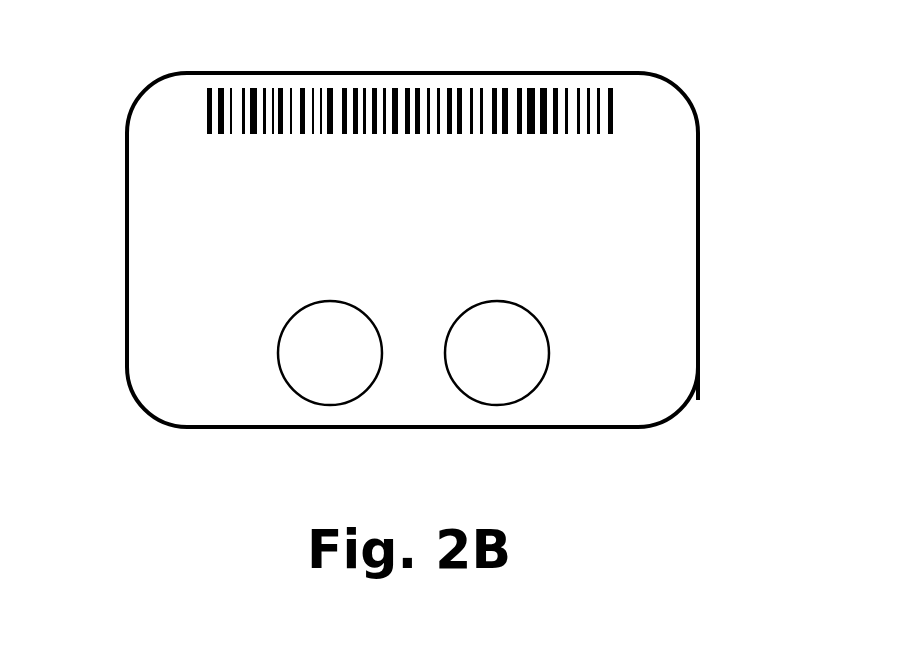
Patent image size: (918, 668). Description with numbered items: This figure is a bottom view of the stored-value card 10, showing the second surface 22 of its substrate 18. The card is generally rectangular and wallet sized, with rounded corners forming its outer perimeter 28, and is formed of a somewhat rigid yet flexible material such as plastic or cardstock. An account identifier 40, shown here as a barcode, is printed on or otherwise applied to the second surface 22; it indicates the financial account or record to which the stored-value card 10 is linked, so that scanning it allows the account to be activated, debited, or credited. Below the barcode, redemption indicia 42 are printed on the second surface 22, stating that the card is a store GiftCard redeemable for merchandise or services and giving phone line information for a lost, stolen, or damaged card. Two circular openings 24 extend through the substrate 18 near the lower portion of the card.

The stored-value card 10 is at (701, 70).
The account identifier 40 is at (190, 112).
The redemption indicia 42 is at (165, 193).
The substrate 18 is at (145, 276).
The second surface 22 is at (148, 340).
The outer perimeter 28 is at (699, 352).
The aperture or opening 24 is at (318, 362).